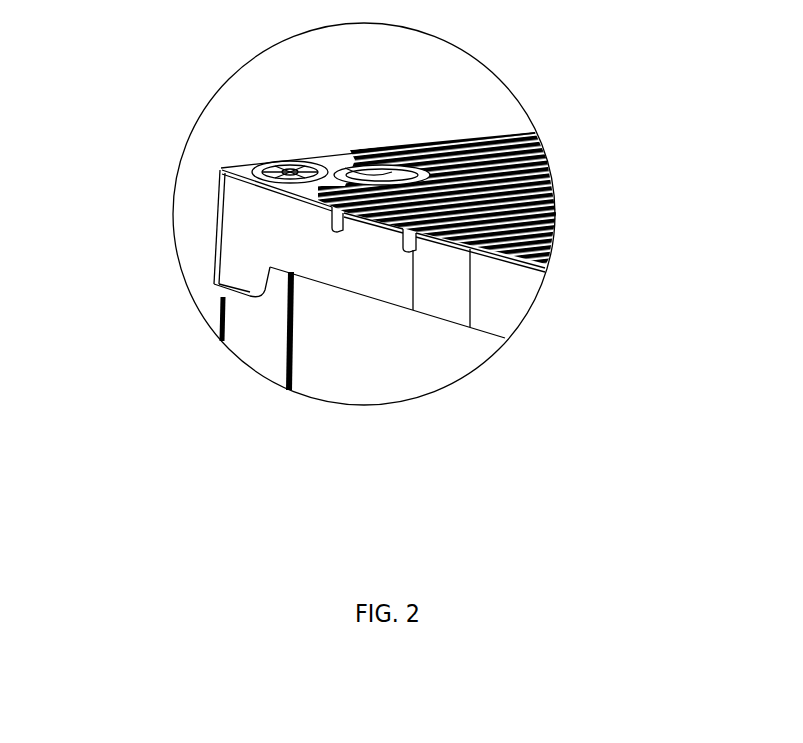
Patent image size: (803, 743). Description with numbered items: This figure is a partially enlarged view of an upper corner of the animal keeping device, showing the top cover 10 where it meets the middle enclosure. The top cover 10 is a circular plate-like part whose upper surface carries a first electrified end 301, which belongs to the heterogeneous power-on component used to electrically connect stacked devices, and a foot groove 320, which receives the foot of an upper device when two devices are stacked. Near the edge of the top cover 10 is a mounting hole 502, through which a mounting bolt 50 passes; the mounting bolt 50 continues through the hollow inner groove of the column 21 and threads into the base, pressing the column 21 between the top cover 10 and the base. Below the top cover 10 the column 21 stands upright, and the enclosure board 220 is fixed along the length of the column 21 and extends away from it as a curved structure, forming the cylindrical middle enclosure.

The top cover 10 is at (480, 247).
The column 21 is at (248, 348).
The mounting bolt 50 is at (179, 132).
The first electrified end 301 is at (525, 172).
The foot groove 320 is at (519, 101).
The mounting hole 502 is at (235, 164).
The enclosure board 220 is at (362, 357).